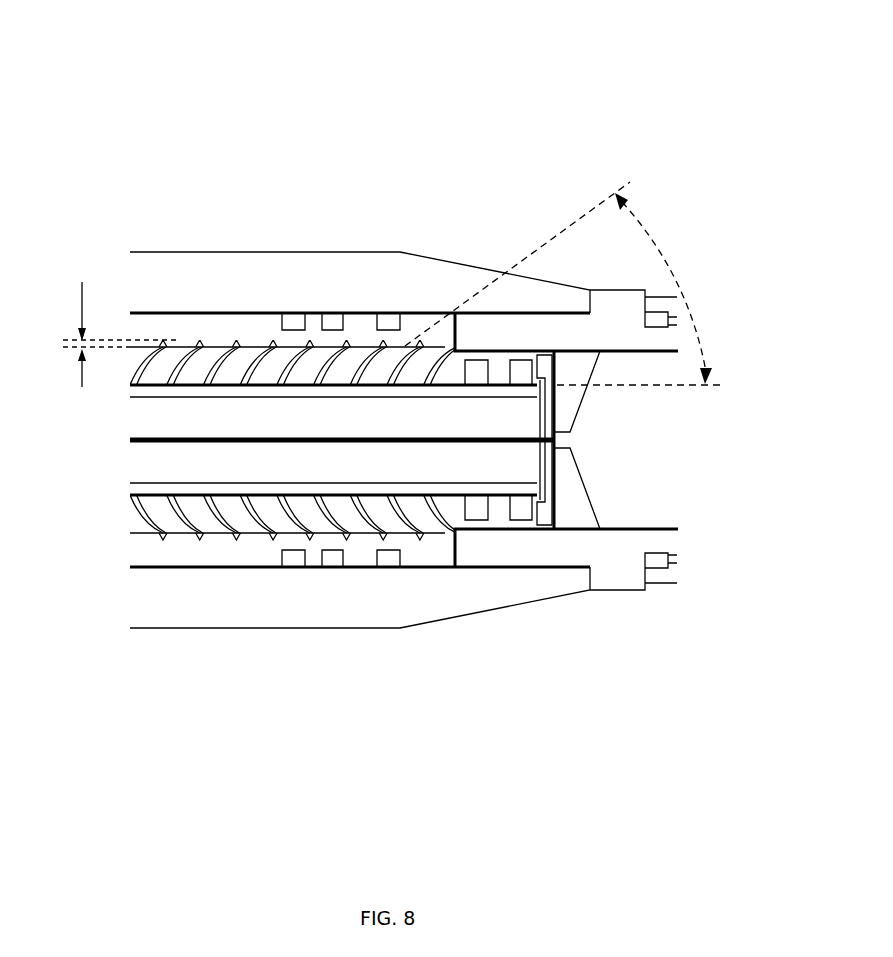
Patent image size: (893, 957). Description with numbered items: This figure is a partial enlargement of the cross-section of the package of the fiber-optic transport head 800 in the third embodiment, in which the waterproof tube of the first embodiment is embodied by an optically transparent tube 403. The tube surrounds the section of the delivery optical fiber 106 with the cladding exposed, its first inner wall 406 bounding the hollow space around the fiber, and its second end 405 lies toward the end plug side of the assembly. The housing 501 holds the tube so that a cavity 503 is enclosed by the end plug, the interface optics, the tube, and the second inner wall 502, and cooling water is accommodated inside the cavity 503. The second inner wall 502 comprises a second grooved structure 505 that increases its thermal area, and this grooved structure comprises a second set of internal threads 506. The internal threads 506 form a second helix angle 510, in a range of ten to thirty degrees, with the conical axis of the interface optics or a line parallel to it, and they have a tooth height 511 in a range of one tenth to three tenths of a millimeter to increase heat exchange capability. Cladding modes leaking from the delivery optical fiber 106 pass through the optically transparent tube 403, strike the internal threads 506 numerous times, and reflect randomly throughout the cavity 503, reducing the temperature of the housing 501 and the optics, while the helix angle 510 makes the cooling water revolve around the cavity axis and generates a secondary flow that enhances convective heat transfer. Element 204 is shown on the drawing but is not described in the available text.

The package of the fiber-optic transport head 800 is at (320, 222).
The housing 501 is at (196, 238).
The second inner wall 502 is at (249, 345).
The optically transparent tube 403 is at (328, 377).
The second set of internal threads 506 is at (375, 365).
The second grooved structure 505 is at (355, 525).
The cavity 503 is at (403, 515).
The first inner wall 406 is at (260, 485).
The delivery optical fiber 106 is at (195, 445).
The second end 405 is at (543, 455).
The nozzle tip 204 is at (554, 452).
The second helix angle 510 is at (672, 260).
The tooth height 511 is at (120, 323).